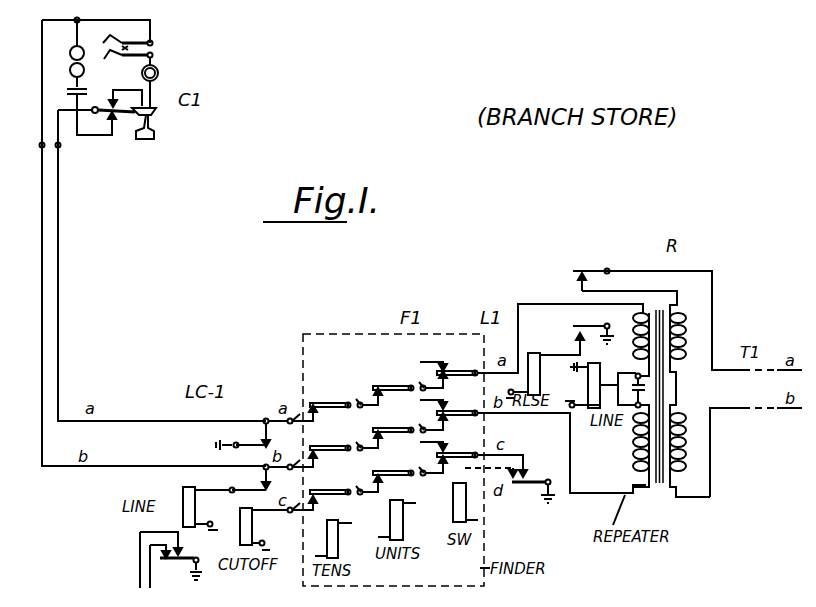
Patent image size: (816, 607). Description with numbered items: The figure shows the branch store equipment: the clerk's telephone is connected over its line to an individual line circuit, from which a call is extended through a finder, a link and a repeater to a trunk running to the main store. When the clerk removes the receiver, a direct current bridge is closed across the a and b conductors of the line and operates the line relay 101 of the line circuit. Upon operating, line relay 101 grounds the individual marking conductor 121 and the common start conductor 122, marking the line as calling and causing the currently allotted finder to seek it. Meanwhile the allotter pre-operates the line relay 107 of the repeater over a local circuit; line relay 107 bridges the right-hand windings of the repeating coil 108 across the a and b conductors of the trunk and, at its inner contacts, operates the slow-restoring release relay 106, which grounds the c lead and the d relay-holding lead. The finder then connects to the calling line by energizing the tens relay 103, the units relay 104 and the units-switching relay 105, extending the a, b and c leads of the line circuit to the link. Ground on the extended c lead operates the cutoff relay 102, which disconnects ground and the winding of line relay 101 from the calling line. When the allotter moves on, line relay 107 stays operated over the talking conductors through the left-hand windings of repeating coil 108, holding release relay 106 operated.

The line relay 101 is at (183, 494).
The cutoff relay 102 is at (240, 514).
The tens relay 103 is at (346, 543).
The units relay 104 is at (403, 528).
The units-switching relay 105 is at (453, 488).
The release relay 106 is at (548, 348).
The line relay 107 is at (588, 384).
The repeating coil 108 is at (661, 308).
The individual marking conductor 121 is at (140, 542).
The common start conductor 122 is at (150, 557).